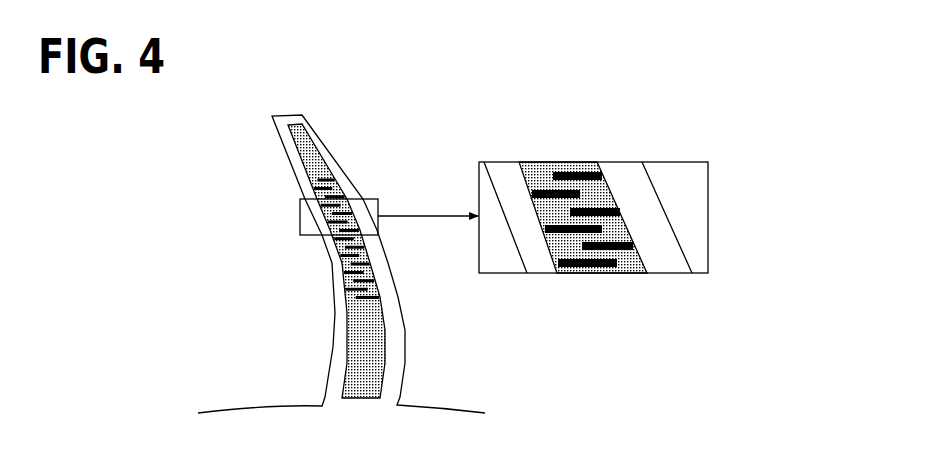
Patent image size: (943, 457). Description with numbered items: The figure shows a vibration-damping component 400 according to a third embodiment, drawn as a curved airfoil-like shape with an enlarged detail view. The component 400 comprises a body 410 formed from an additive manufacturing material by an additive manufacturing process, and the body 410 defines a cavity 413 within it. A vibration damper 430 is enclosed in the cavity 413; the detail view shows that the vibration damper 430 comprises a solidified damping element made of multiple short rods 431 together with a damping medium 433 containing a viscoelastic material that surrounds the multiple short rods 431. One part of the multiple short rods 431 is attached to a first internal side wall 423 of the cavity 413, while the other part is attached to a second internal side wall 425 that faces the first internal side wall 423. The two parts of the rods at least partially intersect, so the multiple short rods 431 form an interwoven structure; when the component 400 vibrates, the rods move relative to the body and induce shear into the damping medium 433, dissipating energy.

The vibration-damping component 400 is at (437, 68).
The body 410 is at (292, 167).
The cavity 413 is at (357, 320).
The first internal side wall 423 is at (328, 250).
The second internal side wall 425 is at (363, 238).
The vibration damper 430 is at (766, 162).
The multiple short rods 431 is at (620, 212).
The damping medium 433 is at (618, 228).